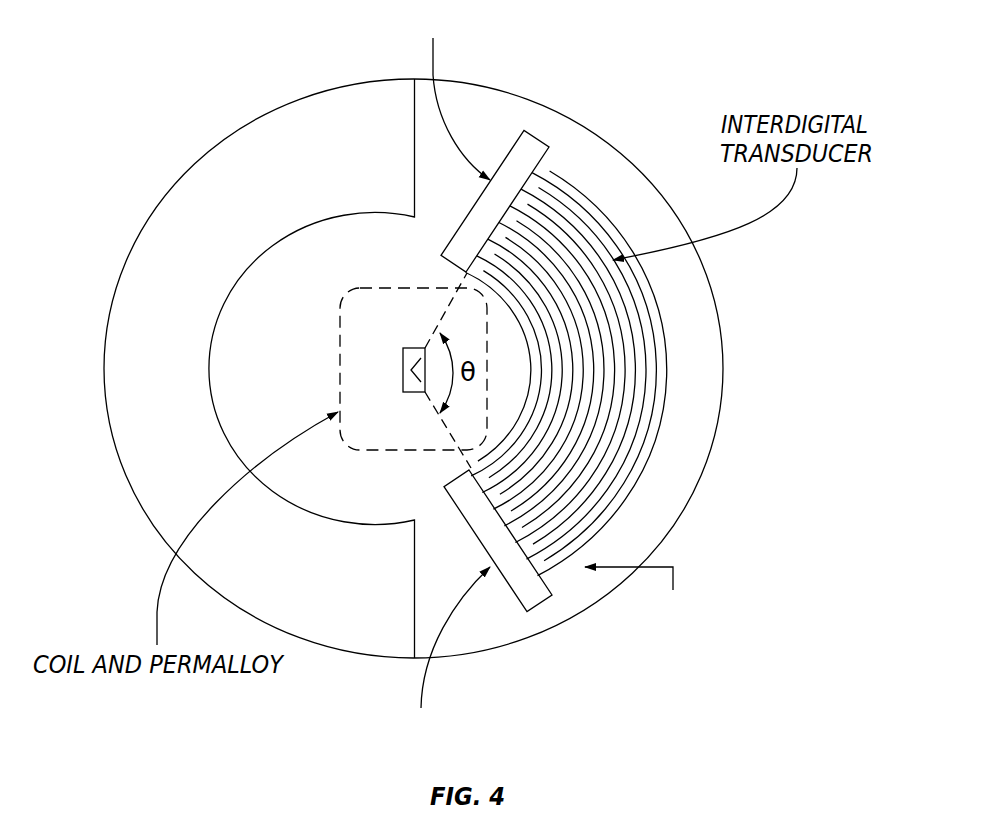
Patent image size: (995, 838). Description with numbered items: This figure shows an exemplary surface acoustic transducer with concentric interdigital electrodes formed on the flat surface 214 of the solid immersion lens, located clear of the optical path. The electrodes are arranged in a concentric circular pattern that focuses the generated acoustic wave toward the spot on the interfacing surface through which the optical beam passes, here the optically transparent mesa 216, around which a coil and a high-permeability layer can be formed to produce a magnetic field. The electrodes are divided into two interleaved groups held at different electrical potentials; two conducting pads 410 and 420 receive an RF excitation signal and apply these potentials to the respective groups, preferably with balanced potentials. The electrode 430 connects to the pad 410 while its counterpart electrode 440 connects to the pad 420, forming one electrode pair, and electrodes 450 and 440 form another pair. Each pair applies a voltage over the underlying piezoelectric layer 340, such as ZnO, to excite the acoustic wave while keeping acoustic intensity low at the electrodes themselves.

The flat surface 214 is at (716, 366).
The mesa 216 is at (400, 369).
The conducting pad 420 is at (527, 130).
The conducting pad 410 is at (516, 603).
The electrode 440 is at (552, 162).
The electrode 450 is at (583, 203).
The electrode 430 is at (637, 492).
The piezoelectric layer 340 is at (673, 620).